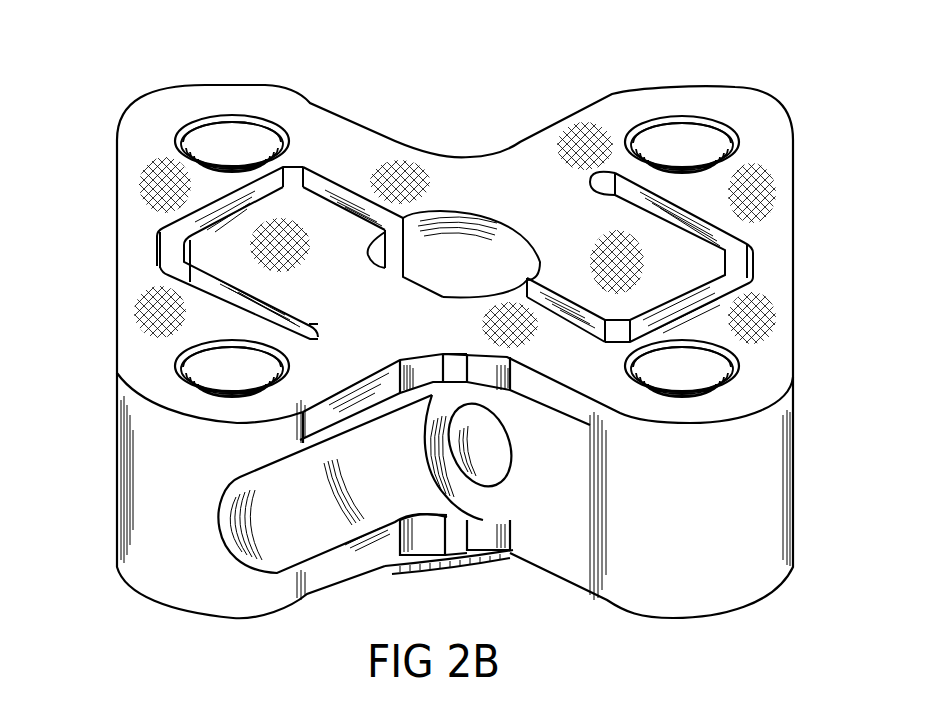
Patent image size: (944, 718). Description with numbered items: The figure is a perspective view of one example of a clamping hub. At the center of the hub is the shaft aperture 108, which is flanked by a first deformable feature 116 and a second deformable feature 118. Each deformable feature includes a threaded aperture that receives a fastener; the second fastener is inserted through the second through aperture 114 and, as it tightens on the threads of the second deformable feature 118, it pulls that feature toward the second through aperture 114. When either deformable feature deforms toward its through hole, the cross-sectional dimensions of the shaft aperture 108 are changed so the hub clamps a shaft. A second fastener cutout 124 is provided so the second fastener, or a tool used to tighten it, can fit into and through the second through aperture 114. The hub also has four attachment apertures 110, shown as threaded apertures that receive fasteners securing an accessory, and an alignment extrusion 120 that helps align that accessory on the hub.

The shaft aperture 108 is at (520, 248).
The attachment apertures 110 is at (250, 125).
The second through aperture 114 is at (500, 457).
The first deformable feature 116 is at (203, 247).
The second deformable feature 118 is at (703, 262).
The alignment extrusion 120 is at (457, 555).
The second fastener cutout 124 is at (309, 520).